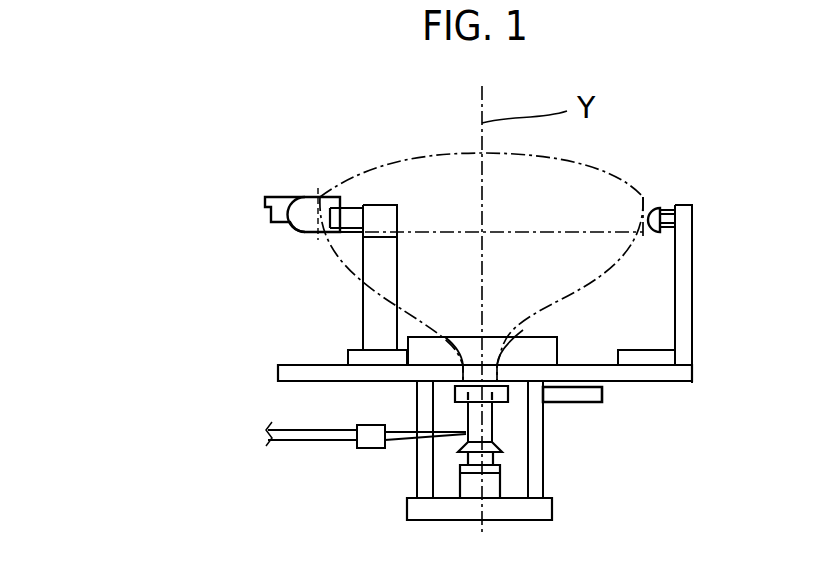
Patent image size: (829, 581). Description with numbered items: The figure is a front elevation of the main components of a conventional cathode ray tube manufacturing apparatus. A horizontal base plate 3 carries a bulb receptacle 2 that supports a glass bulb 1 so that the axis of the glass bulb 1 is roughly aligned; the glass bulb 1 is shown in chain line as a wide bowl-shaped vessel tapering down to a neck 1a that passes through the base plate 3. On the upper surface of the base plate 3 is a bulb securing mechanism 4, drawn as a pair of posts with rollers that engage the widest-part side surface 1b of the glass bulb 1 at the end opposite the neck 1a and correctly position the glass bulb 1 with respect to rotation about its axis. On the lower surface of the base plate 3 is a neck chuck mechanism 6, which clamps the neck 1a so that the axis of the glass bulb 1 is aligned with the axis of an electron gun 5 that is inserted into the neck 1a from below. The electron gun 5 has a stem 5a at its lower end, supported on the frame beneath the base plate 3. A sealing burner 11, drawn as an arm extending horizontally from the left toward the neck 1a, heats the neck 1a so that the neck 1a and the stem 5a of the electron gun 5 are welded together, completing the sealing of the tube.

The glass bulb 1 is at (580, 193).
The neck 1a is at (508, 430).
The widest-part side surface 1b is at (643, 205).
The bulb receptacle 2 is at (558, 345).
The base plate 3 is at (683, 378).
The bulb securing mechanism 4 is at (310, 208).
The electron gun 5 is at (493, 458).
The stem 5a is at (493, 470).
The neck chuck mechanism 6 is at (602, 392).
The sealing burner 11 is at (368, 437).